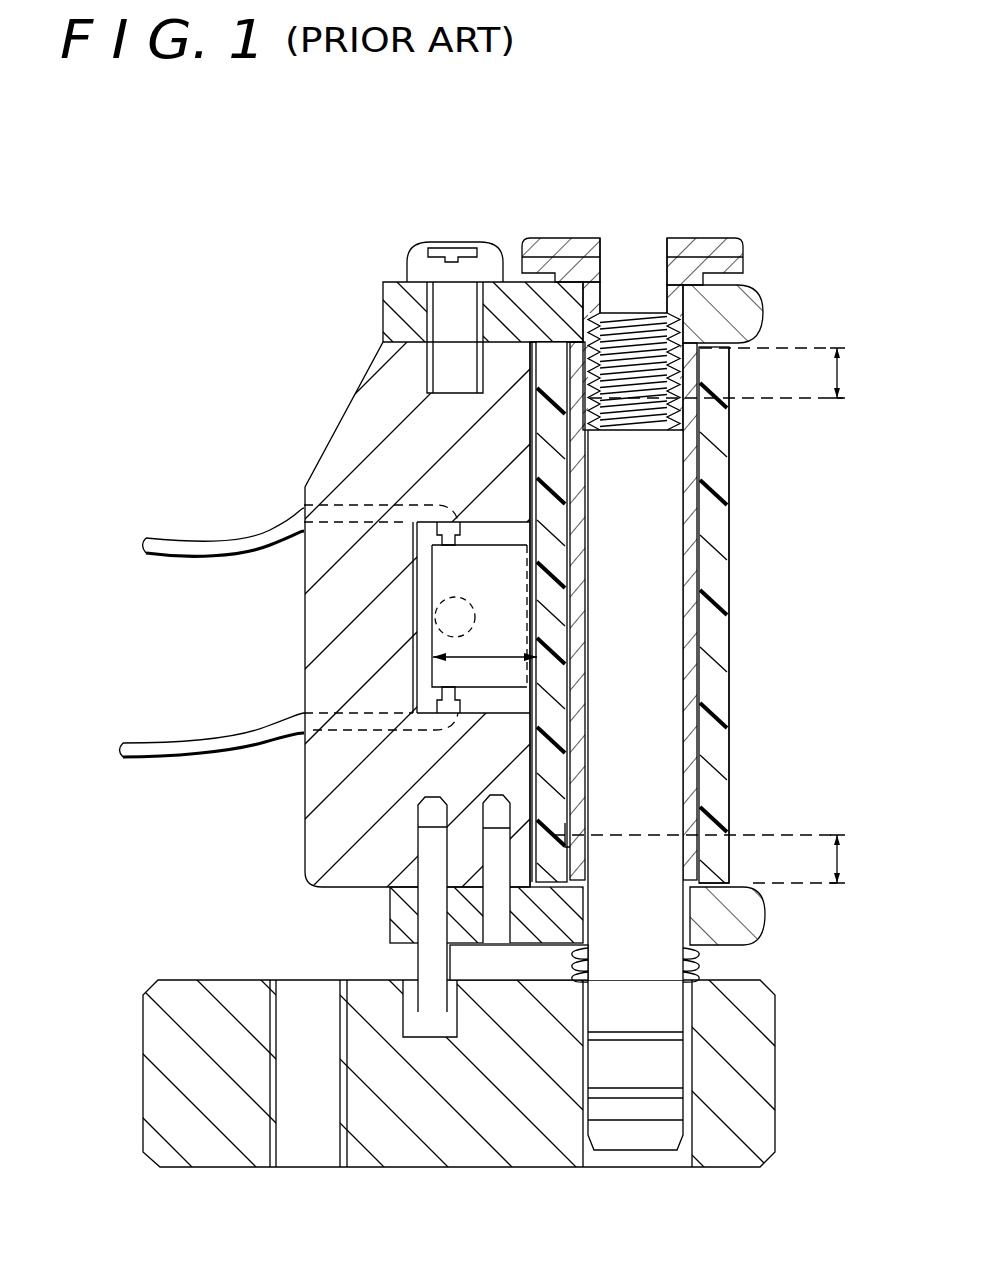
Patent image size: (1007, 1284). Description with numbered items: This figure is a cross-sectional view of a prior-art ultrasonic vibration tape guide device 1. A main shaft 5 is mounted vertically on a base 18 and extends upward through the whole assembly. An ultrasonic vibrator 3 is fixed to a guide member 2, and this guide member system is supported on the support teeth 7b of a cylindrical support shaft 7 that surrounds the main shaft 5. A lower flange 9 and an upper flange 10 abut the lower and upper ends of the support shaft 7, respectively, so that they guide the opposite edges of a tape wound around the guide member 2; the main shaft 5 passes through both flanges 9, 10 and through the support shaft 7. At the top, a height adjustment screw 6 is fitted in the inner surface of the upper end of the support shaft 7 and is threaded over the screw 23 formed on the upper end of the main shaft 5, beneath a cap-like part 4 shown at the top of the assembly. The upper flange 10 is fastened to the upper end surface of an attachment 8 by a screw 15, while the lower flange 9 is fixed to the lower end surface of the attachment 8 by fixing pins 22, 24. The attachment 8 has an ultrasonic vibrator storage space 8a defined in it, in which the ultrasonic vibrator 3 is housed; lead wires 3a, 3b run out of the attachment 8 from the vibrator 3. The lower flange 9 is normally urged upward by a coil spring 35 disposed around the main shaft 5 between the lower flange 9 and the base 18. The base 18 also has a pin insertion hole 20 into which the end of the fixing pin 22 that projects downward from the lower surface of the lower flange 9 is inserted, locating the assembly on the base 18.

The ultrasonic vibration tape guide device 1 is at (240, 402).
The guide member 2 is at (733, 575).
The ultrasonic vibrator 3 is at (457, 577).
The lead wire 3a is at (190, 545).
The lead wire 3b is at (145, 760).
The cap 4 is at (755, 263).
The main shaft 5 is at (662, 551).
The height adjustment screw 6 is at (673, 327).
The support shaft 7 is at (700, 747).
The support teeth 7b is at (693, 833).
The attachment 8 is at (362, 397).
The ultrasonic vibrator storage space 8a is at (418, 543).
The lower flange 9 is at (755, 905).
The upper flange 10 is at (753, 310).
The screw 15 is at (420, 258).
The base 18 is at (203, 1140).
The pin insertion hole 20 is at (403, 978).
The fixing pin 22 is at (433, 963).
The screw 23 is at (640, 307).
The fixing pin 24 is at (497, 856).
The coil spring 35 is at (700, 968).